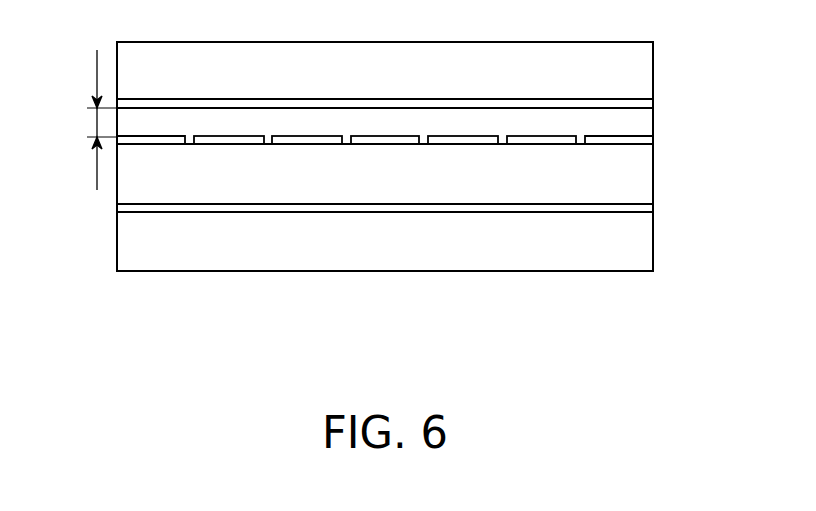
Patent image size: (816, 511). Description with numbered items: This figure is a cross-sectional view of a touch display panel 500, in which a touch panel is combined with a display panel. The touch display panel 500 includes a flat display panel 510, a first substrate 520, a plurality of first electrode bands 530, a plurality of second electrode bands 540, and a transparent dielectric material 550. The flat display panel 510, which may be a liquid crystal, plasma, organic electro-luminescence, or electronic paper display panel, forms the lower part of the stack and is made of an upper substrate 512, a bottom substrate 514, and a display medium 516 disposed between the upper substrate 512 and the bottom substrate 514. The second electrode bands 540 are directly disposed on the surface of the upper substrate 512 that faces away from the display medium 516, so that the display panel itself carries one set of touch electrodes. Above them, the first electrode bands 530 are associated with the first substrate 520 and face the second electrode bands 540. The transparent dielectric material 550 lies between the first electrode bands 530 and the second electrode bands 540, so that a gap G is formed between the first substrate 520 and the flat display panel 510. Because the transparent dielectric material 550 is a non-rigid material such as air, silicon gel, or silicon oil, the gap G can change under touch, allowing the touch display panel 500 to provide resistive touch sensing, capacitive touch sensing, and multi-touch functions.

The touch display panel 500 is at (690, 345).
The flat display panel 510 is at (417, 238).
The upper substrate 512 is at (252, 185).
The bottom substrate 514 is at (422, 242).
The display medium 516 is at (335, 208).
The first substrate 520 is at (633, 63).
The first electrode bands 530 is at (641, 105).
The second electrode bands 540 is at (640, 143).
The transparent dielectric material 550 is at (640, 124).
The gap G is at (88, 120).